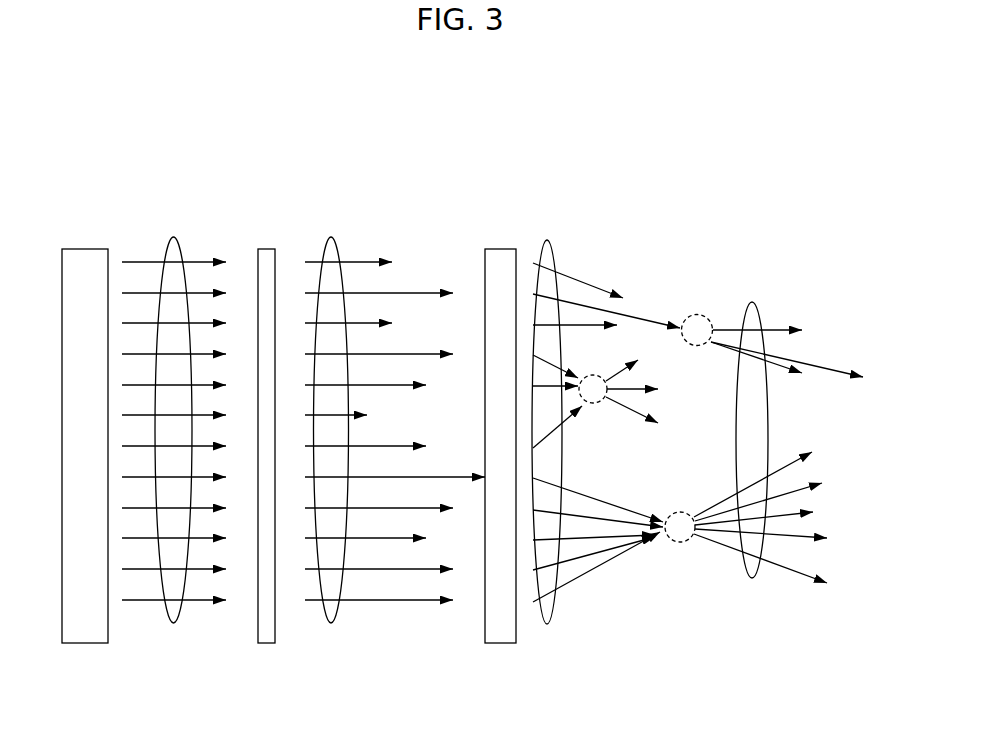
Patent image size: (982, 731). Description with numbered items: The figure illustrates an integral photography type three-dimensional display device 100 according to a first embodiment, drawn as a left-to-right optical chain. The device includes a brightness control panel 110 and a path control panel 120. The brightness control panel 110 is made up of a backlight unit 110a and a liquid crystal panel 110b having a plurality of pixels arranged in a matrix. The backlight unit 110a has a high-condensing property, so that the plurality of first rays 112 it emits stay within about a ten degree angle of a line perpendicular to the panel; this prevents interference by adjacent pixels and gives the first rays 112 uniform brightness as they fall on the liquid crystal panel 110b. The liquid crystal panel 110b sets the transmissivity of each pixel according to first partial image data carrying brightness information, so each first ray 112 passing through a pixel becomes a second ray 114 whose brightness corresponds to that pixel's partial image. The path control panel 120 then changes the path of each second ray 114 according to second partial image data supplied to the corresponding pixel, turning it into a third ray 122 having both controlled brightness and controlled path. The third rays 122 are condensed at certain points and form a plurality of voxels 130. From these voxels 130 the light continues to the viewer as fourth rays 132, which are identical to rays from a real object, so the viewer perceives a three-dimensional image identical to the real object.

The integral photography type display device 100 is at (377, 127).
The brightness control panel 110 is at (130, 133).
The backlight unit 110a is at (85, 249).
The liquid crystal panel 110b is at (268, 249).
The first ray 112 is at (173, 623).
The second ray 114 is at (331, 623).
The path control panel 120 is at (502, 249).
The third ray 122 is at (547, 625).
The voxel 130 is at (698, 359).
The fourth ray 132 is at (752, 577).